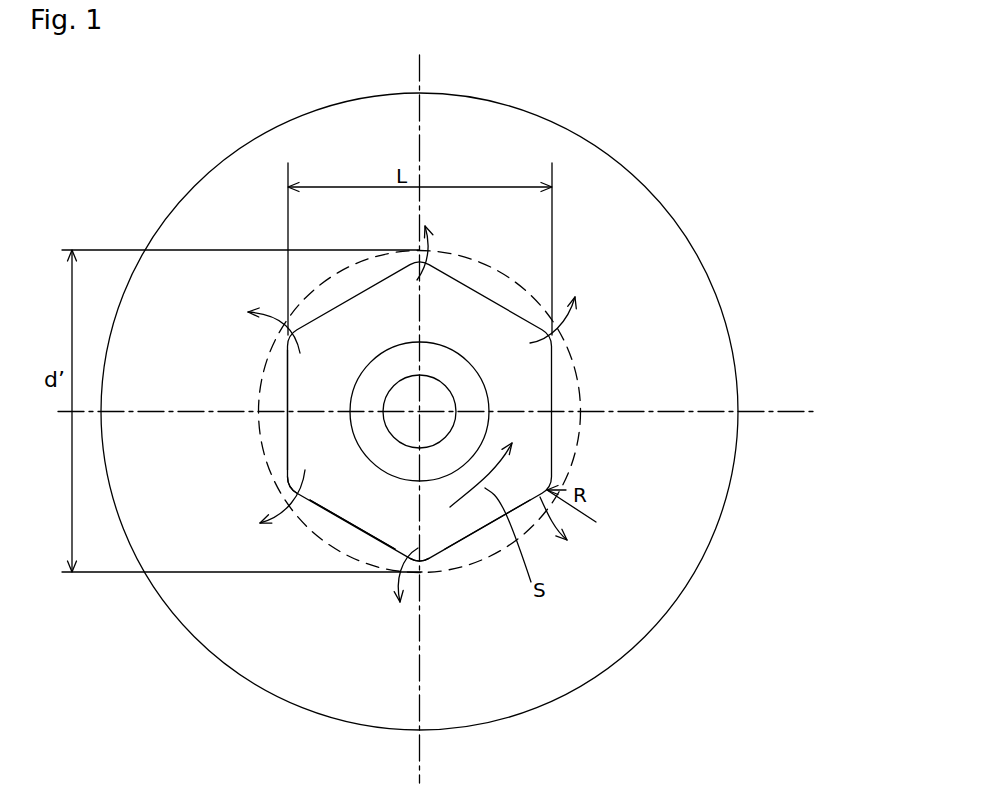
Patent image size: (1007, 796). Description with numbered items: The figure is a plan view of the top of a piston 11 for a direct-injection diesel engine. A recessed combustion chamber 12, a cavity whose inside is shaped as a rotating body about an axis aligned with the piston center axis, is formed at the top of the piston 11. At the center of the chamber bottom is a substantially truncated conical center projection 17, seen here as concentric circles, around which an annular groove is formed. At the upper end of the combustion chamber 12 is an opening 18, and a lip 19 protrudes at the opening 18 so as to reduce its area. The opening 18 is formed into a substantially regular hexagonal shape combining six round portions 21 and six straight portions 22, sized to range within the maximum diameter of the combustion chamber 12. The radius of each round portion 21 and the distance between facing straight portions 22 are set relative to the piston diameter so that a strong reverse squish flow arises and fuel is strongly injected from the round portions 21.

The piston 11 is at (632, 212).
The combustion chamber 12 is at (560, 372).
The center projection 17 is at (370, 393).
The opening 18 is at (342, 508).
The lip 19 is at (307, 523).
The round portion 21 is at (292, 494).
The straight portion 22 is at (287, 437).